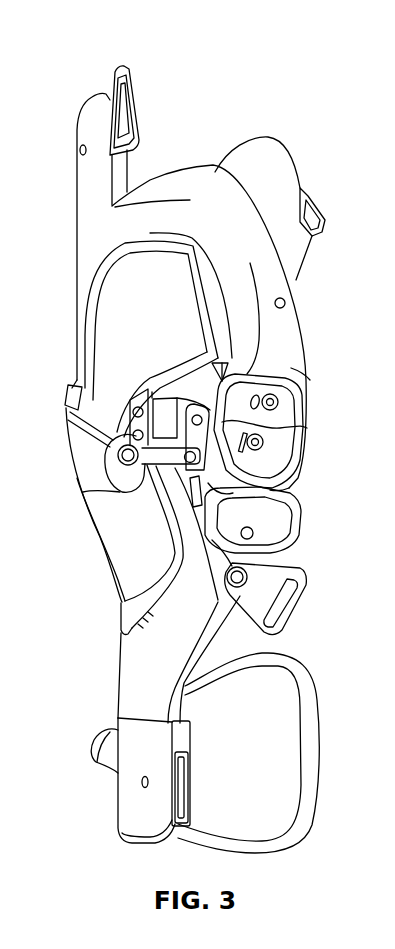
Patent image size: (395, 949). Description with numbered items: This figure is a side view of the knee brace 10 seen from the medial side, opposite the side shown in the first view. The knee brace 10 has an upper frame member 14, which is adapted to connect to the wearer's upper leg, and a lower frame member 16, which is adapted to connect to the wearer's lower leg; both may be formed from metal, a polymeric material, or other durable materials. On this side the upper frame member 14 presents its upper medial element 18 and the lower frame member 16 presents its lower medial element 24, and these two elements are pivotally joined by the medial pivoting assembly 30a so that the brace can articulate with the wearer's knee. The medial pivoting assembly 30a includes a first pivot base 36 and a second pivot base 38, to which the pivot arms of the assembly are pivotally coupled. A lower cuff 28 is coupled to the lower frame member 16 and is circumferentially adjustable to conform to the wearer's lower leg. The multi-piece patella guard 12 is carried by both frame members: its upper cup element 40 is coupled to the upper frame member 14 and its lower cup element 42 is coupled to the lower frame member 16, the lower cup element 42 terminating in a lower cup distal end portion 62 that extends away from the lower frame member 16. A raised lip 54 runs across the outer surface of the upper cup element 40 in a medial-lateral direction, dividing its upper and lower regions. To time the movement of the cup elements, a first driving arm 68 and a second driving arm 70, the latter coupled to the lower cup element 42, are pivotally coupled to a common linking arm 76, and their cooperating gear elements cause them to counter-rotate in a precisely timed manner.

The knee brace 10 is at (262, 80).
The patella guard 12 is at (66, 469).
The upper frame member 14 is at (158, 193).
The lower frame member 16 is at (119, 672).
The upper medial element 18 is at (290, 325).
The lower medial element 24 is at (187, 622).
The lower cuff 28 is at (121, 804).
The medial pivoting assembly 30a is at (289, 487).
The first pivot base 36 is at (285, 410).
The second pivot base 38 is at (283, 520).
The upper cup element 40 is at (98, 333).
The lower cup element 42 is at (103, 543).
The raised lip 54 is at (66, 398).
The lower cup distal end portion 62 is at (78, 430).
The first driving arm 68 is at (176, 430).
The second driving arm 70 is at (83, 492).
The linking arm 76 is at (296, 430).